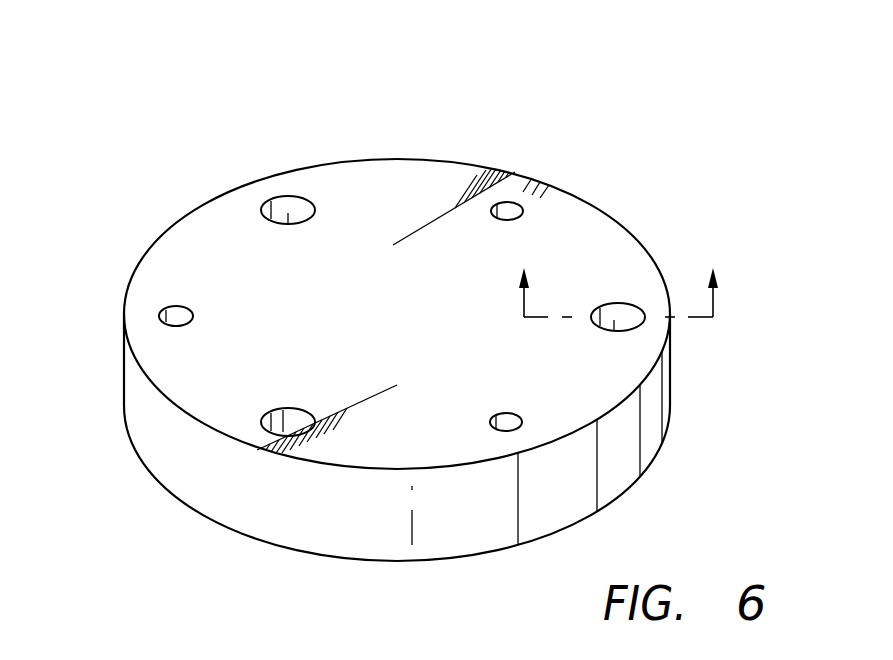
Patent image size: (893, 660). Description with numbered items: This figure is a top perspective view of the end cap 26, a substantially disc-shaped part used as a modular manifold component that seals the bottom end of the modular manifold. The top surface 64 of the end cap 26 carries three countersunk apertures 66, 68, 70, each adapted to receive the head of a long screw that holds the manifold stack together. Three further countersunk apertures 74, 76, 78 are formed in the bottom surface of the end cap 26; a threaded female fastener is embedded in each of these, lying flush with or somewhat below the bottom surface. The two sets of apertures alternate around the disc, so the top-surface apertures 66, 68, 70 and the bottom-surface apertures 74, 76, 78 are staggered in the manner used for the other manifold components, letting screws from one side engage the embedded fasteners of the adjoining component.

The end cap 26 is at (440, 288).
The top surface 64 is at (598, 243).
The countersunk aperture 66 is at (622, 320).
The countersunk aperture 68 is at (290, 210).
The countersunk aperture 70 is at (288, 422).
The countersunk aperture 74 is at (513, 417).
The countersunk aperture 76 is at (510, 210).
The countersunk aperture 78 is at (176, 314).